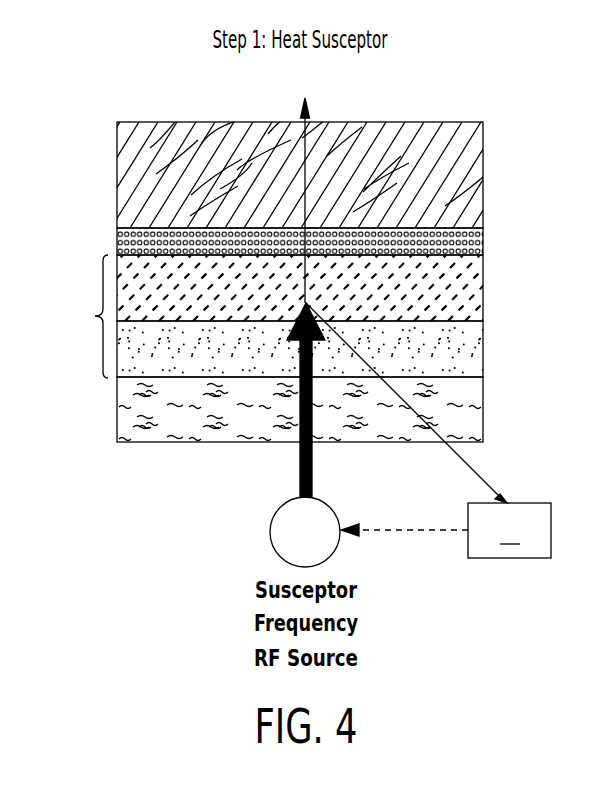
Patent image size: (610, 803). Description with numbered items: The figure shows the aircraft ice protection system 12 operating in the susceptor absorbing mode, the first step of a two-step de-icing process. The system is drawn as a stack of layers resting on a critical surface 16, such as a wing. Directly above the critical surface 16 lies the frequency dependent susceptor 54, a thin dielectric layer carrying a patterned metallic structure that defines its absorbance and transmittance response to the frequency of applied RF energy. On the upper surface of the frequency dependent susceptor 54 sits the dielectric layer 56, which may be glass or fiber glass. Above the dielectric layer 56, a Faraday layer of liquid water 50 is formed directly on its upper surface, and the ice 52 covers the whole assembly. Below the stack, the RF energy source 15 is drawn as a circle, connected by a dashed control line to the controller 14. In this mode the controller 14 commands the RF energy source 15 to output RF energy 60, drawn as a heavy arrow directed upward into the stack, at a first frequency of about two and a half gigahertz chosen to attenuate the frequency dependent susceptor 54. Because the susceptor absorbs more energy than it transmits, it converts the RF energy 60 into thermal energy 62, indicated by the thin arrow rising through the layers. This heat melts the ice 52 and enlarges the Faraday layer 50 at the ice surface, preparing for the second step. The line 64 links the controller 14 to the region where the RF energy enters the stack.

The ice protection system 12 is at (87, 316).
The controller 14 is at (446, 530).
The RF energy source 15 is at (270, 532).
The critical surface 16 is at (478, 408).
The Faraday layer of liquid water 50 is at (477, 243).
The ice 52 is at (475, 180).
The frequency dependent susceptor 54 is at (478, 350).
The dielectric layer 56 is at (478, 288).
The RF energy 60 is at (298, 485).
The thermal energy 62 is at (318, 148).
The control signal line 64 is at (478, 470).